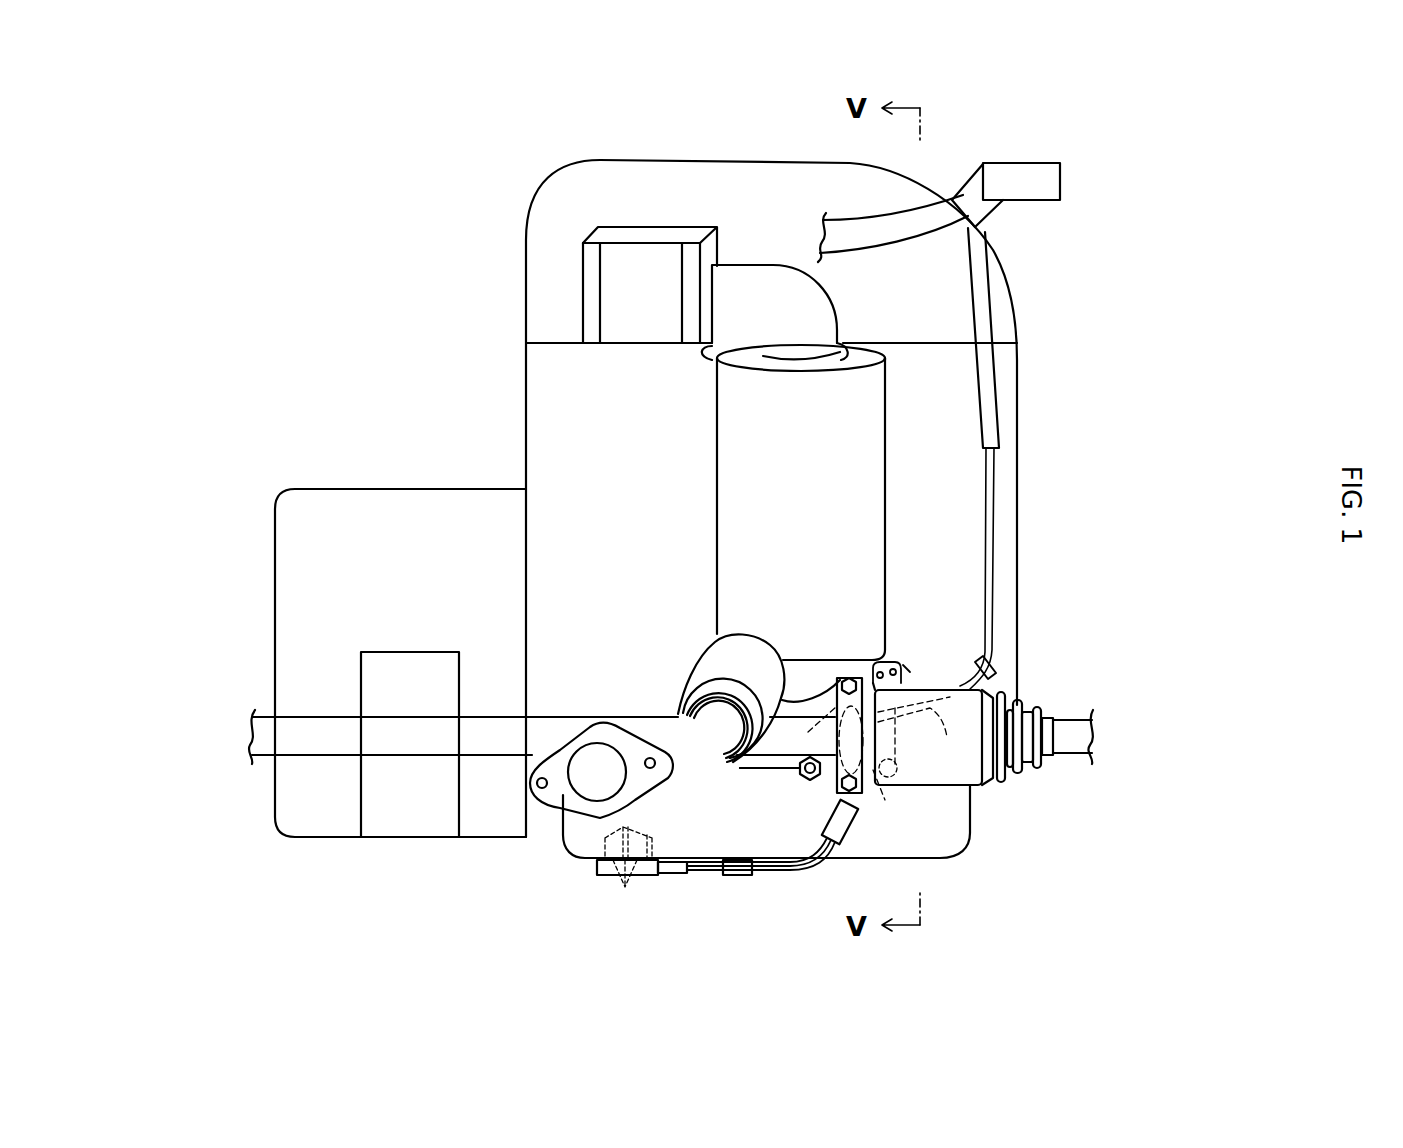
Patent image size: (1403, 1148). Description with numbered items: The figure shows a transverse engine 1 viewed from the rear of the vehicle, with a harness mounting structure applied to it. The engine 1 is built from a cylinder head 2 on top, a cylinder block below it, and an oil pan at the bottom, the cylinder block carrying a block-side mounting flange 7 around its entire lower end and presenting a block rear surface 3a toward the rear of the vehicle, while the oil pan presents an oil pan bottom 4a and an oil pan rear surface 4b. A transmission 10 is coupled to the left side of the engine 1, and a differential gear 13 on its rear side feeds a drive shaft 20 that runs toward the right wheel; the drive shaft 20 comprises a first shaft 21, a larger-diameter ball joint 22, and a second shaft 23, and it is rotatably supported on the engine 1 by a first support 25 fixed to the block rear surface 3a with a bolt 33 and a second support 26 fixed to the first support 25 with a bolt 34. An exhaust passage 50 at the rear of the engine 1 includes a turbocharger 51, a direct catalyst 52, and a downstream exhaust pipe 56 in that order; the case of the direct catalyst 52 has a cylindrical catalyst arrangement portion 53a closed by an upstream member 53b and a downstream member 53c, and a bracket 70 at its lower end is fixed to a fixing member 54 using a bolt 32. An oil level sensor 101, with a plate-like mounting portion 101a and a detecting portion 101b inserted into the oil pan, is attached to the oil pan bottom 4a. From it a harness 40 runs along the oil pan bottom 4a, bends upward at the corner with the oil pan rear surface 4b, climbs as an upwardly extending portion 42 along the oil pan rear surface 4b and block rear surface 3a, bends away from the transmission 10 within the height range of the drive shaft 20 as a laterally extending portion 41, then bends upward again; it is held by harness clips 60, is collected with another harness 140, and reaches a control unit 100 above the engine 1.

The engine 1 is at (950, 107).
The cylinder head 2 is at (645, 175).
The block rear surface 3a is at (1007, 548).
The oil pan bottom 4a is at (920, 874).
The oil pan rear surface 4b is at (950, 835).
The block-side mounting flange 7 is at (742, 770).
The transmission 10 is at (301, 536).
The differential gear 13 is at (402, 823).
The drive shaft 20 is at (1100, 659).
The first shaft 21 is at (543, 725).
The ball joint 22 is at (967, 698).
The second shaft 23 is at (1068, 745).
The first support 25 is at (822, 805).
The second support 26 is at (815, 742).
The bolt 32 is at (897, 681).
The bolt 33 is at (807, 780).
The bolt 34 is at (846, 678).
The harness 40 is at (789, 887).
The laterally extending portion 41 is at (930, 725).
The upwardly extending portion 42 is at (872, 787).
The exhaust passage 50 is at (775, 204).
The turbocharger 51 is at (670, 234).
The direct catalyst 52 is at (686, 466).
The catalyst arrangement portion 53a is at (862, 443).
The upstream member 53b is at (848, 345).
The downstream member 53c is at (806, 675).
The fixing member 54 is at (905, 665).
The downstream exhaust pipe 56 is at (658, 722).
The harness clip 60 is at (737, 877).
The bracket 70 is at (881, 663).
The control unit 100 is at (1023, 168).
The oil level sensor 101 is at (663, 924).
The mounting portion 101a is at (597, 868).
The detecting portion 101b is at (641, 874).
The another harness 140 is at (992, 668).